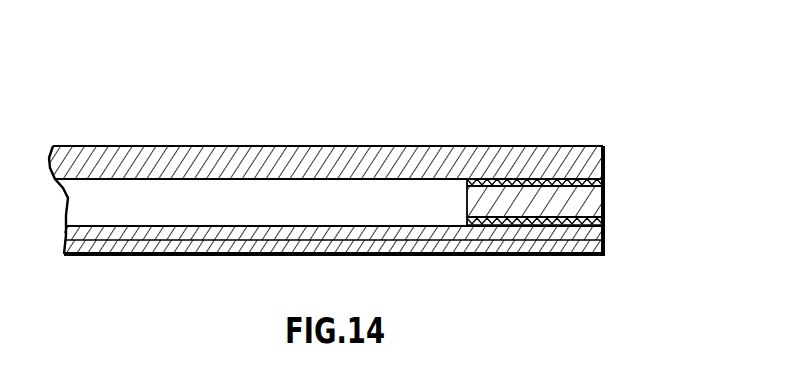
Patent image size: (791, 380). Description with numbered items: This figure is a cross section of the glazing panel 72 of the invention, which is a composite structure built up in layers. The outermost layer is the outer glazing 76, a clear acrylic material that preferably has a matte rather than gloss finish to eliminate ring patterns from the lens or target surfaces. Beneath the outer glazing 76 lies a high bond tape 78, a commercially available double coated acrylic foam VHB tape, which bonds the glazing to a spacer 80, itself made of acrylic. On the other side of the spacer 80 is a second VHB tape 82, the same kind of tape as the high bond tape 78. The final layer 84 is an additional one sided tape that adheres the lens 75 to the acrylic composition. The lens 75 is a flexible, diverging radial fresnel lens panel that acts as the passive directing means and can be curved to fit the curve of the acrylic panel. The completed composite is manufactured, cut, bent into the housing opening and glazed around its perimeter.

The glazing panel 72 is at (333, 172).
The fresnel lens panel 75 is at (604, 254).
The outer glazing 76 is at (108, 153).
The high bond tape 78 is at (605, 180).
The spacer 80 is at (477, 202).
The VHB tape 82 is at (606, 220).
The one sided tape 84 is at (170, 240).